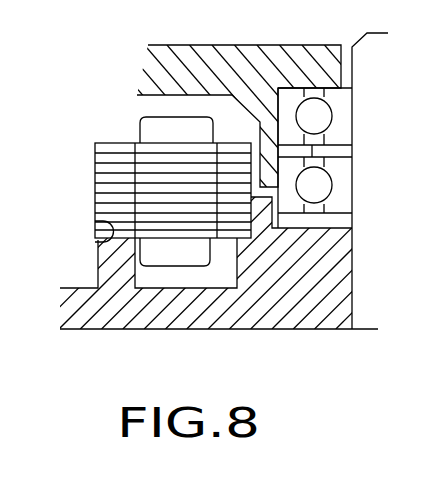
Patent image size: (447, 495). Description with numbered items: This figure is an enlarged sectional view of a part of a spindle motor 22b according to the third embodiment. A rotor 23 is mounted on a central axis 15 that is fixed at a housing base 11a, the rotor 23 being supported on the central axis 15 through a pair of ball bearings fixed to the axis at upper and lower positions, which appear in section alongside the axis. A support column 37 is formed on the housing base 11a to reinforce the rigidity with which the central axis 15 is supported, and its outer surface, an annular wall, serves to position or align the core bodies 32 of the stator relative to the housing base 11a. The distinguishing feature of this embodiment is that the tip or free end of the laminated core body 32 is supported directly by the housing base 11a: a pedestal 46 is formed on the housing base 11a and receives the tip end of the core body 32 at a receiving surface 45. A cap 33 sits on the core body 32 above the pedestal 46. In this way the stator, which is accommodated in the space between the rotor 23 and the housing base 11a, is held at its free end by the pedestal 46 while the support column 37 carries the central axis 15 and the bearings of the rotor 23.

The spindle motor 22b is at (92, 61).
The rotor 23 is at (192, 45).
The central axis 15 is at (364, 33).
The cap 33 is at (141, 120).
The core body 32 is at (95, 186).
The receiving surface 45 is at (96, 224).
The pedestal 46 is at (98, 268).
The support column 37 is at (352, 252).
The housing base 11a is at (250, 330).